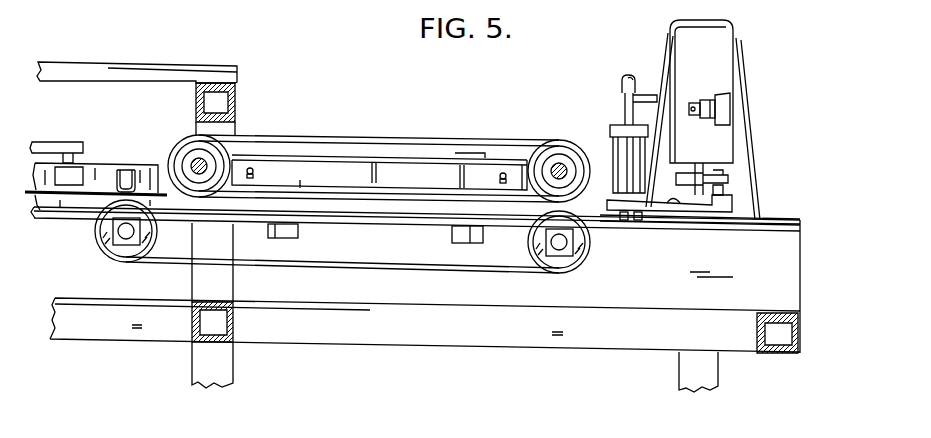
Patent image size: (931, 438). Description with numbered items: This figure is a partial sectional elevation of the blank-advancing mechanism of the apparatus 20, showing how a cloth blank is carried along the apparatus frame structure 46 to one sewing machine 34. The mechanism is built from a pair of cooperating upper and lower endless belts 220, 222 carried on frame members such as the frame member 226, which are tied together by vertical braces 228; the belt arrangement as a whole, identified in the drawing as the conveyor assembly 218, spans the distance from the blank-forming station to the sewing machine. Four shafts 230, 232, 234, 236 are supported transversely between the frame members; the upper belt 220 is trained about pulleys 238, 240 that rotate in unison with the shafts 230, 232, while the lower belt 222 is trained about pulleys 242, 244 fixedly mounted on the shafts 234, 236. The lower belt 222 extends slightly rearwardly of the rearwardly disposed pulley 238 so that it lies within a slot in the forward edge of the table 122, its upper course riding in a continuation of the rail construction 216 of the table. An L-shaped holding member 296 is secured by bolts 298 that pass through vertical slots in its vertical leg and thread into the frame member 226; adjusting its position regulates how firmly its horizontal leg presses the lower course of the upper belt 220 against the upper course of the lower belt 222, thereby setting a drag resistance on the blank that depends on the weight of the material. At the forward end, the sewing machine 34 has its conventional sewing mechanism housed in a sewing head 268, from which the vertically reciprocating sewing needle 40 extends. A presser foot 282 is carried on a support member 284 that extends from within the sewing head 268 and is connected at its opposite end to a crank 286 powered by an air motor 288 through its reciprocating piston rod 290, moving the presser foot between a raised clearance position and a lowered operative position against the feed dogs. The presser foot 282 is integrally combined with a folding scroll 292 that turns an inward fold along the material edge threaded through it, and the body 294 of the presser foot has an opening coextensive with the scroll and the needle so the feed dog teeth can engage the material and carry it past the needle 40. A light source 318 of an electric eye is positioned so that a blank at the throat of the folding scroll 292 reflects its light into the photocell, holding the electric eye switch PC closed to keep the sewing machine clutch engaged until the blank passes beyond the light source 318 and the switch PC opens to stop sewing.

The apparatus 20 is at (152, 54).
The sewing machine 34 is at (737, 40).
The sewing needle 40 is at (700, 212).
The apparatus frame structure 46 is at (308, 339).
The table 122 is at (402, 223).
The rail 216 is at (442, 220).
The conveyor assembly 218 is at (335, 102).
The upper belt 220 is at (397, 139).
The lower belt 222 is at (442, 268).
The frame member 226 is at (417, 157).
The vertical brace 228 is at (298, 230).
The shaft 230 is at (208, 163).
The shaft 232 is at (563, 170).
The shaft 234 is at (117, 233).
The shaft 236 is at (562, 246).
The pulley 238 is at (185, 147).
The pulley 240 is at (557, 148).
The pulley 242 is at (117, 252).
The pulley 244 is at (558, 263).
The sewing head 268 is at (723, 55).
The presser foot 282 is at (728, 203).
The support member 284 is at (692, 172).
The crank 286 is at (643, 95).
The air motor 288 is at (610, 162).
The piston rod 290 is at (627, 110).
The folding scroll 292 is at (683, 203).
The body of the presser foot 294 is at (655, 220).
The L-shaped holding member 296 is at (339, 172).
The bolt 298 is at (256, 168).
The light source 318 is at (733, 112).
The electric eye switch PC is at (715, 96).